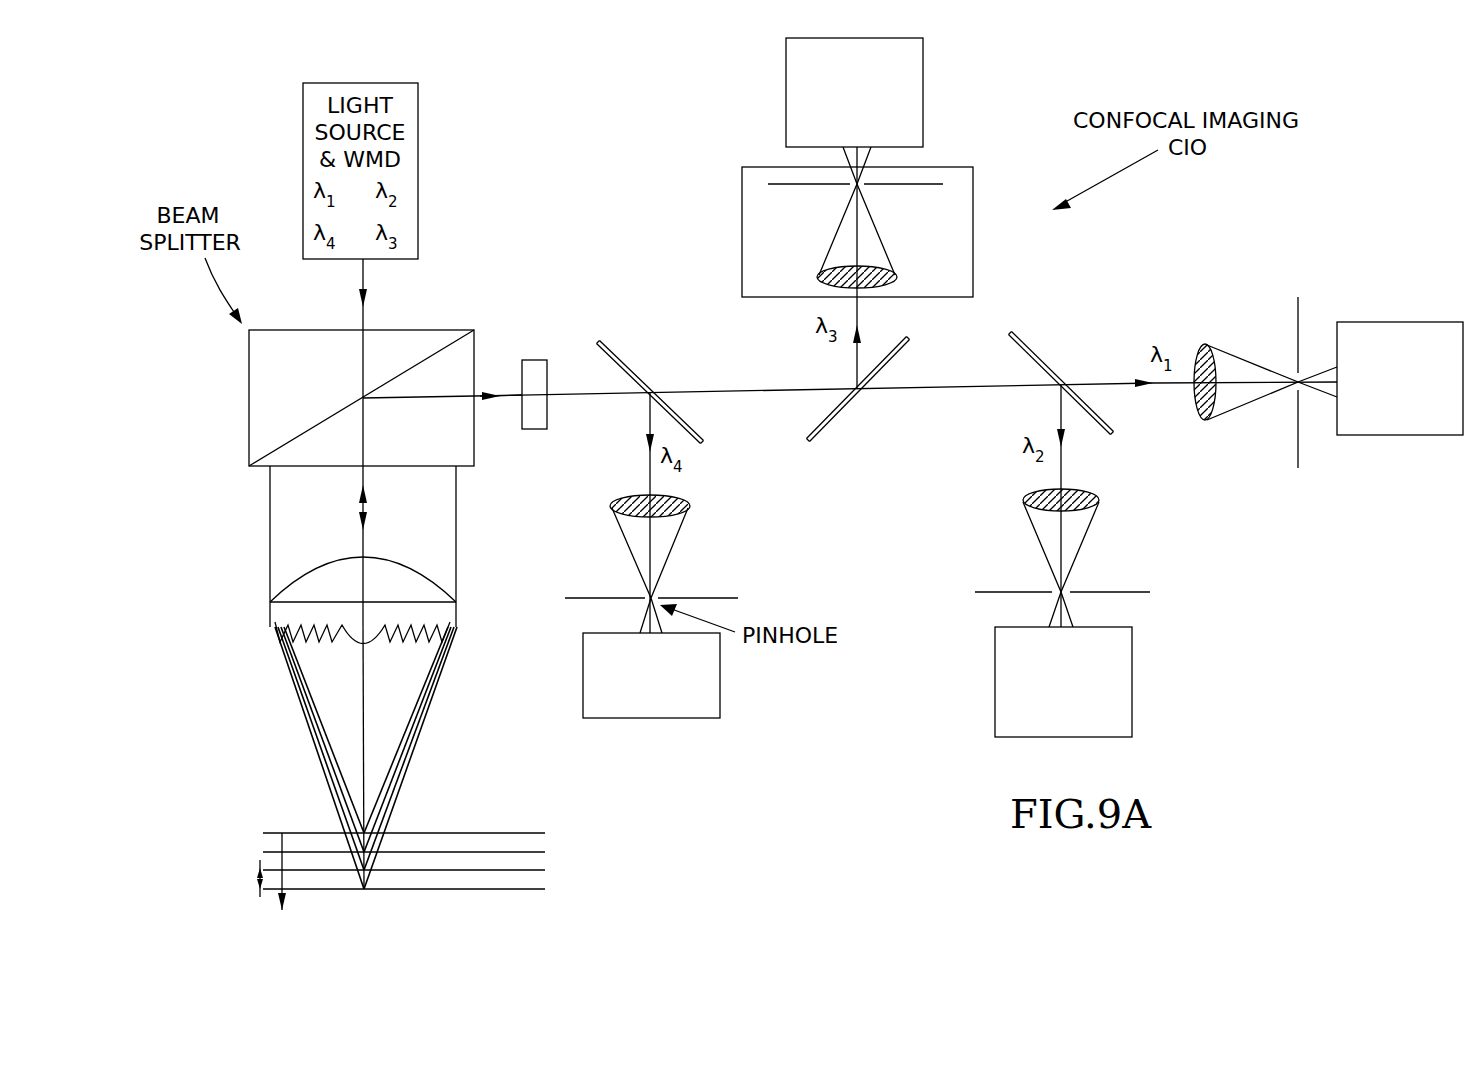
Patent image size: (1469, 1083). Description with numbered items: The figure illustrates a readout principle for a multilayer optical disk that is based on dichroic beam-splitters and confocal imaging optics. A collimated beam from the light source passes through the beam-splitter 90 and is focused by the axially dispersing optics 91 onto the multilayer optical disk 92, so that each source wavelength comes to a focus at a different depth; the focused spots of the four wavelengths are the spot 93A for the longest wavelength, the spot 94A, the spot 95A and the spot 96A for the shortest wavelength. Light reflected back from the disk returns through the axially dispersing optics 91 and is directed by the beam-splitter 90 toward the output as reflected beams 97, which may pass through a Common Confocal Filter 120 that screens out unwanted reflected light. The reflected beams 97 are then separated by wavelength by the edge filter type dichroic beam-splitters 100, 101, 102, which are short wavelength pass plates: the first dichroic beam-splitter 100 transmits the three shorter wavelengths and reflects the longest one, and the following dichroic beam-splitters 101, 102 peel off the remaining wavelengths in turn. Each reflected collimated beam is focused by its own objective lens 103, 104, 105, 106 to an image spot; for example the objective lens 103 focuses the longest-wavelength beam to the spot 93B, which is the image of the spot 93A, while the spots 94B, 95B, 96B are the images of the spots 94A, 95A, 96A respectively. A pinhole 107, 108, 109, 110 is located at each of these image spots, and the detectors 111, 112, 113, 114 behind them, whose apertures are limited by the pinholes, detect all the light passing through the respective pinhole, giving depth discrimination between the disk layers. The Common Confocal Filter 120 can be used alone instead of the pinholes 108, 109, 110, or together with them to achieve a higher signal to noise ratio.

The beam-splitter 90 is at (249, 397).
The axially dispersing optics 91 is at (282, 617).
The multilayer optical disk (MOD) 92 is at (220, 842).
The focused spot of λ4 93A is at (368, 830).
The focused spot of λ3 94A is at (368, 849).
The focused spot of λ2 95A is at (368, 868).
The focused spot of λ1 96A is at (368, 889).
The spot 93B is at (647, 595).
The spot 94B is at (852, 188).
The spot 95B is at (1068, 588).
The spot 96B is at (1308, 405).
The reflected beams 97 is at (505, 397).
The dichroic beam-splitter 100 is at (615, 350).
The dichroic beam-splitter 101 is at (840, 410).
The dichroic beam-splitter 102 is at (1040, 360).
The objective lens 103 is at (632, 500).
The objective lens 104 is at (885, 270).
The objective lens 105 is at (1035, 492).
The objective lens 106 is at (1200, 365).
The pinhole 107 is at (705, 598).
The pinhole 108 is at (902, 188).
The pinhole 109 is at (1008, 590).
The pinhole 110 is at (1296, 325).
The detector 111 is at (722, 688).
The detector 112 is at (786, 120).
The detector 113 is at (1132, 675).
The detector 114 is at (1378, 322).
The Common Confocal Filter (CCF) 120 is at (533, 360).